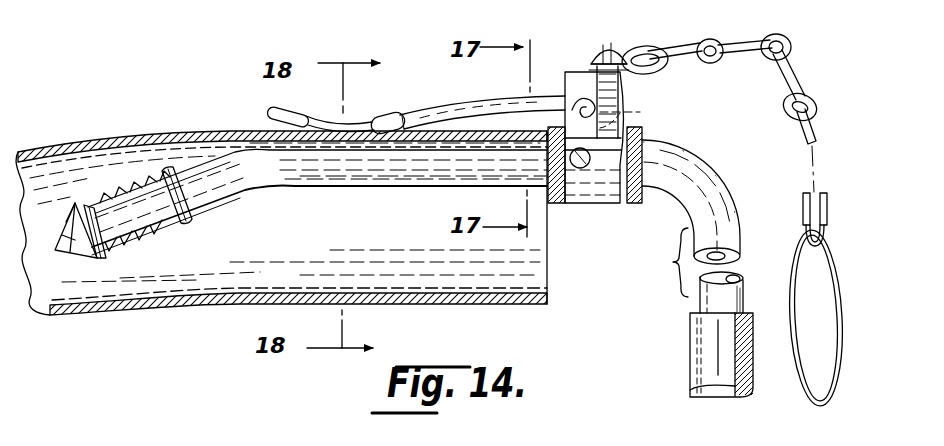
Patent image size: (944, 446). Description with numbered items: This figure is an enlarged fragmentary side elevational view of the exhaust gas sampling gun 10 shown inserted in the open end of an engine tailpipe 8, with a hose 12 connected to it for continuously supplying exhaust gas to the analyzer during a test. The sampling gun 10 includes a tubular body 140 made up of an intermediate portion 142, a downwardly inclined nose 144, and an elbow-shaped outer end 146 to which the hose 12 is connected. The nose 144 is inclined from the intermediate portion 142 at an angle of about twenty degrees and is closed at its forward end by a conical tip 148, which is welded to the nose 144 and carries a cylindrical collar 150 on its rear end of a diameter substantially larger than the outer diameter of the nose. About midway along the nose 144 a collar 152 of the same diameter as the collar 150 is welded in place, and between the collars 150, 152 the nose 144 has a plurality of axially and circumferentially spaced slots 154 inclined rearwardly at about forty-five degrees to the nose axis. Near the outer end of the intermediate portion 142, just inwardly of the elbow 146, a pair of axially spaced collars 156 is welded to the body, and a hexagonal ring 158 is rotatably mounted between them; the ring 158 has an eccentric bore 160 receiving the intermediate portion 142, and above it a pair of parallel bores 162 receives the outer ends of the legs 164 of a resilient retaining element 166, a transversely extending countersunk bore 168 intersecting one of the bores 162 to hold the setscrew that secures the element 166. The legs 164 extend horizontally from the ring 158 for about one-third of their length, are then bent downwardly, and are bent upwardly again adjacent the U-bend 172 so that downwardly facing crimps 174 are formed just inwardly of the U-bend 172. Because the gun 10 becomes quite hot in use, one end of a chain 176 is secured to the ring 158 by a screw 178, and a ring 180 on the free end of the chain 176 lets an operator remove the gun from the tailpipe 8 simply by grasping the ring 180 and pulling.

The tailpipe 8 is at (218, 304).
The sampling gun 10 is at (720, 158).
The hose 12 is at (690, 345).
The tubular body 140 is at (488, 188).
The intermediate portion 142 is at (377, 177).
The nose 144 is at (217, 200).
The elbow-shaped outer end 146 is at (741, 290).
The conical tip 148 is at (60, 251).
The cylindrical collar 150 is at (100, 259).
The collar 152 is at (184, 216).
The slots 154 is at (138, 190).
The collars 156 is at (557, 204).
The ring 158 is at (565, 84).
The eccentric bore 160 is at (648, 140).
The parallel bores 162 is at (629, 110).
The legs 164 is at (374, 124).
The resilient retaining element 166 is at (402, 112).
The countersunk bore 168 is at (583, 168).
The U-bend 172 is at (268, 113).
The crimps 174 is at (338, 142).
The chain 176 is at (792, 60).
The screw 178 is at (615, 44).
The ring 180 is at (838, 406).